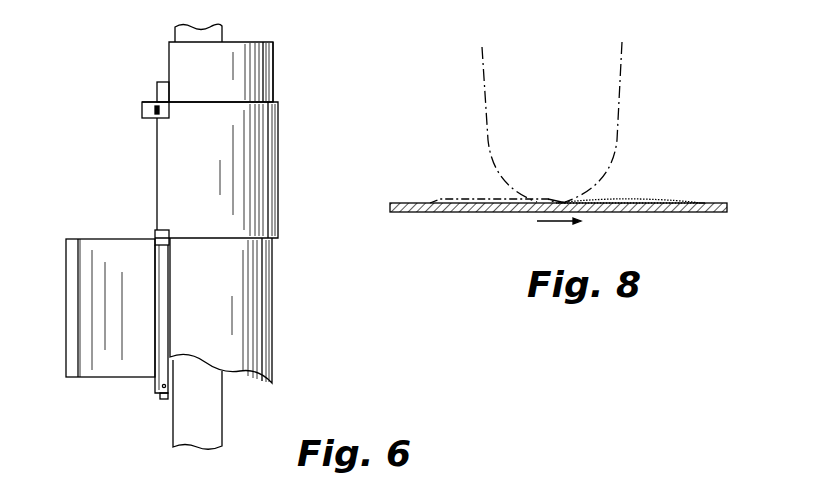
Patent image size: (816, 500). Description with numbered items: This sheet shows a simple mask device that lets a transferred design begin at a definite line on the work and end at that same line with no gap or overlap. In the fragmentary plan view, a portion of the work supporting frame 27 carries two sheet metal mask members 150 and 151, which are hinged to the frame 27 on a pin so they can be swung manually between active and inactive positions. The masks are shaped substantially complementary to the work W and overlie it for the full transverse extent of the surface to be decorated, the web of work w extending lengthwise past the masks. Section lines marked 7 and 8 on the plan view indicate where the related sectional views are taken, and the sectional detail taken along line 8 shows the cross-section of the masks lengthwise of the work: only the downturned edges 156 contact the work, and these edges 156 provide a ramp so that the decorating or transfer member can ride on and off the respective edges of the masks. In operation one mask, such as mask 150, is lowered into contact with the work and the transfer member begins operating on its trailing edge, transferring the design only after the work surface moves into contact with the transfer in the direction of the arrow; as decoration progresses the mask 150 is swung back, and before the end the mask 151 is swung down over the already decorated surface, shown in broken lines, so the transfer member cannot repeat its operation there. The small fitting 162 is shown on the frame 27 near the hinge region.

In FIG. 6, the work supporting frame 27 is at (222, 34).
In FIG. 6, the work w is at (242, 70).
In FIG. 6, the work W is at (276, 255).
In FIG. 6, the mask member 150 is at (260, 163).
In FIG. 8, the mask member 150 is at (640, 200).
In FIG. 6, the mask member 151 is at (120, 223).
In FIG. 8, the mask member 151 is at (470, 198).
In FIG. 6, the bracket post 162 is at (160, 398).
In FIG. 8, the downturned edges 156 is at (585, 190).
In FIG. 6, the section line 7— 7 is at (66, 363).
In FIG. 6, the section line 8— 8 is at (207, 263).